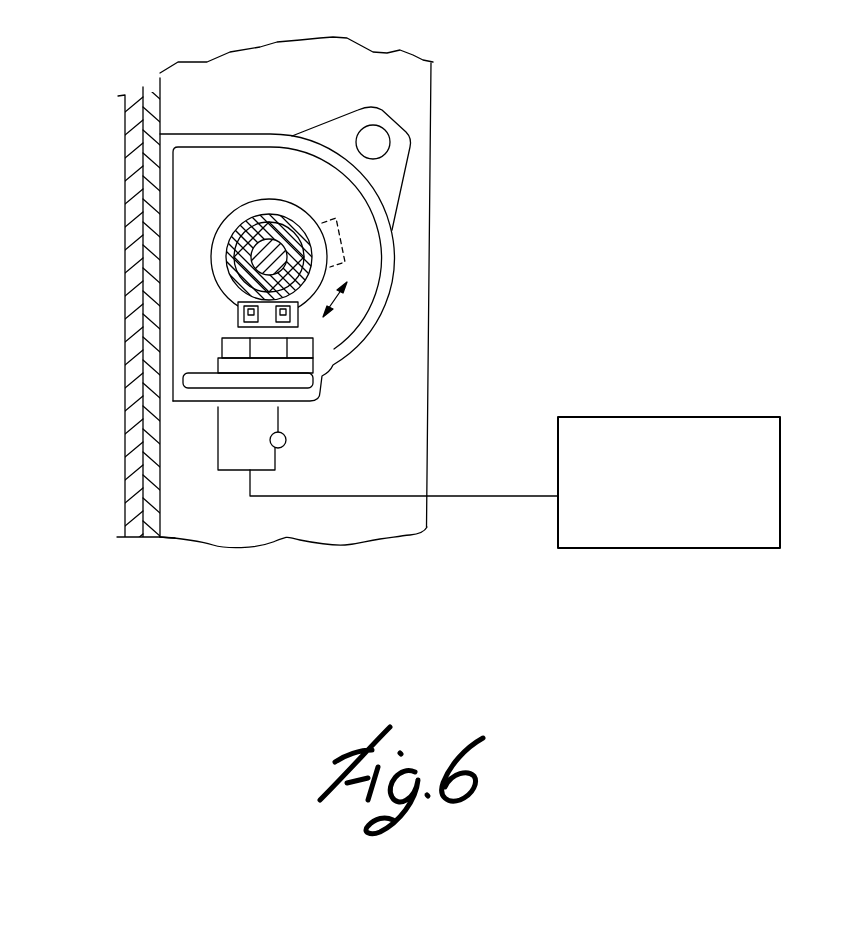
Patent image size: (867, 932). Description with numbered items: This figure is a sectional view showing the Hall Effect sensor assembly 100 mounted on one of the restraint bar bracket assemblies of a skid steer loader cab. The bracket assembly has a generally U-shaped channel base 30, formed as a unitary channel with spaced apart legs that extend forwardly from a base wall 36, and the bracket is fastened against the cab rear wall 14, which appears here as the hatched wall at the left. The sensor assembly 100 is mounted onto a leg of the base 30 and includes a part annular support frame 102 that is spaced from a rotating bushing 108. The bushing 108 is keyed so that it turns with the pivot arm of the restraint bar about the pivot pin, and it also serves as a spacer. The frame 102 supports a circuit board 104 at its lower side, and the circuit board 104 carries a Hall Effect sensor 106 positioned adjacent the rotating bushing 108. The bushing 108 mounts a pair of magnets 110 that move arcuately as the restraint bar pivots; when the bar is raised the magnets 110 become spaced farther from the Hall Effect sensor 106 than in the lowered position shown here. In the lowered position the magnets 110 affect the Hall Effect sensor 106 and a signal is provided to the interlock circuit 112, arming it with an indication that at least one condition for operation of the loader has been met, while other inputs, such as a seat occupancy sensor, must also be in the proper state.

The rear wall 14 is at (120, 500).
The channel base 30 is at (290, 535).
The base wall 36 is at (158, 517).
The Hall Effect sensor assembly 100 is at (394, 260).
The part annular support frame 102 is at (257, 167).
The circuit board 104 is at (288, 385).
The Hall Effect sensor 106 is at (224, 338).
The rotating bushing 108 is at (240, 226).
The magnets 110 is at (243, 308).
The interlock circuit 112 is at (638, 415).